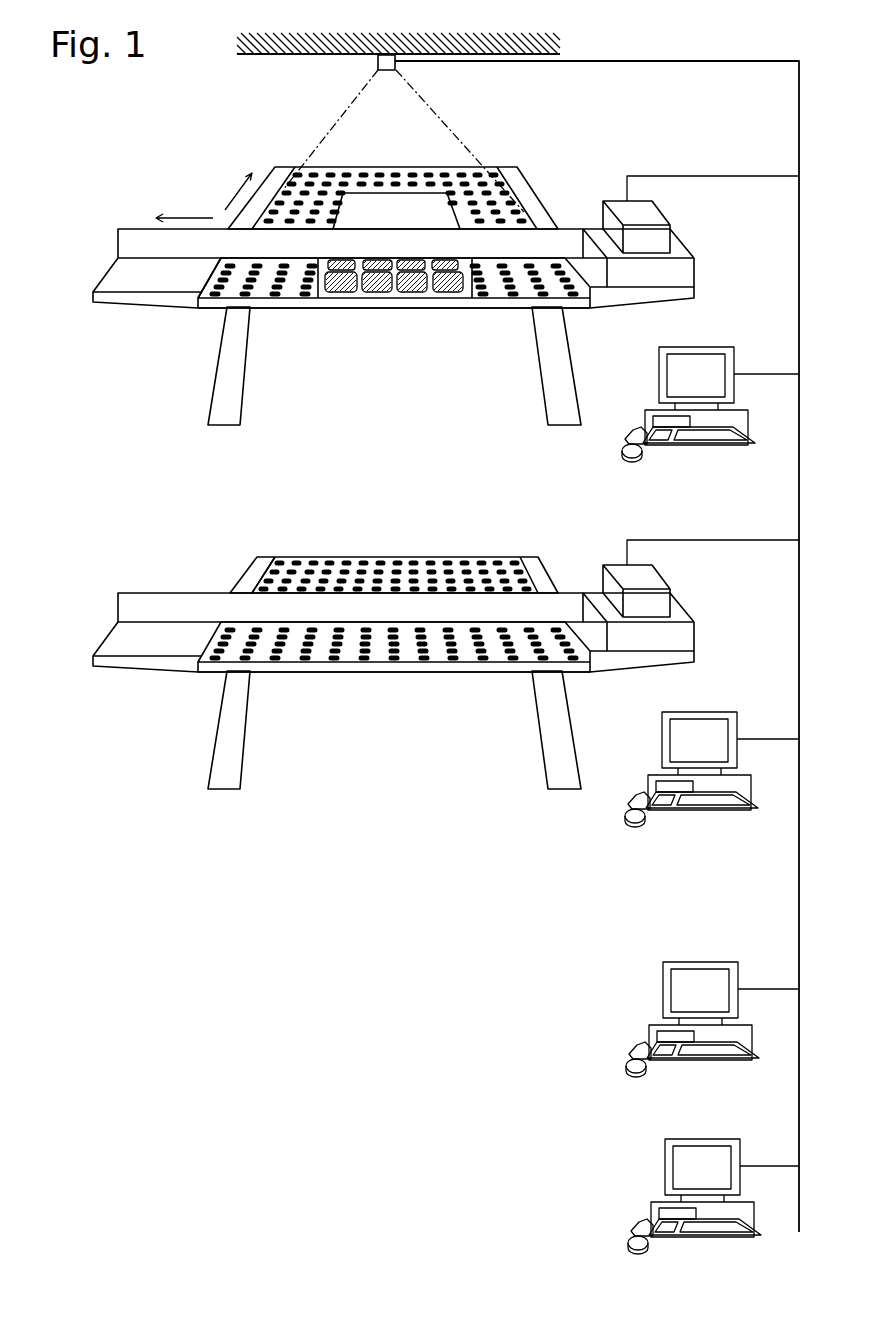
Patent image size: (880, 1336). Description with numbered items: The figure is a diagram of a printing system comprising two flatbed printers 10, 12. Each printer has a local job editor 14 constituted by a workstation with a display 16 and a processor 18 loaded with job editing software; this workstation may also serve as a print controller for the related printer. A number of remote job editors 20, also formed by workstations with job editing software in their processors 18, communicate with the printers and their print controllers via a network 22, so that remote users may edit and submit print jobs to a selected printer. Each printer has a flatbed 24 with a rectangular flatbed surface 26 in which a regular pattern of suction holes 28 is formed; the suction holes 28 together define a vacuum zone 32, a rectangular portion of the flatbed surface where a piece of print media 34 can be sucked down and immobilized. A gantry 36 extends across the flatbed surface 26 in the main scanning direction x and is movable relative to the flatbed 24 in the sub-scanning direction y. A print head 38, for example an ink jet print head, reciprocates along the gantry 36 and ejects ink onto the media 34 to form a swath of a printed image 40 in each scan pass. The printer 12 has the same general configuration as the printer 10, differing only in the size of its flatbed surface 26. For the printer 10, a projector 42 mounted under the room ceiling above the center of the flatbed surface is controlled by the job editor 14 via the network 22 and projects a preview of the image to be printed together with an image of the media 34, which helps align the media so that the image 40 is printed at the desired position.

The flatbed printer 10 is at (160, 167).
The flatbed printer 12 is at (162, 575).
The local job editor 14 is at (598, 441).
The display 16 is at (676, 373).
The processor 18 is at (720, 418).
The remote job editor 20 is at (604, 1013).
The network 22 is at (799, 903).
The flatbed 24 is at (318, 304).
The flatbed surface 26 is at (507, 170).
The suction holes 28 is at (230, 292).
The vacuum zone 32 is at (373, 171).
The print media 34 is at (472, 290).
The gantry 36 is at (147, 247).
The print head 38 is at (672, 240).
The printed image 40 is at (413, 283).
The projector 42 is at (374, 62).